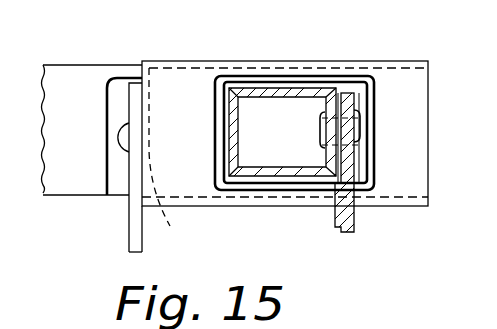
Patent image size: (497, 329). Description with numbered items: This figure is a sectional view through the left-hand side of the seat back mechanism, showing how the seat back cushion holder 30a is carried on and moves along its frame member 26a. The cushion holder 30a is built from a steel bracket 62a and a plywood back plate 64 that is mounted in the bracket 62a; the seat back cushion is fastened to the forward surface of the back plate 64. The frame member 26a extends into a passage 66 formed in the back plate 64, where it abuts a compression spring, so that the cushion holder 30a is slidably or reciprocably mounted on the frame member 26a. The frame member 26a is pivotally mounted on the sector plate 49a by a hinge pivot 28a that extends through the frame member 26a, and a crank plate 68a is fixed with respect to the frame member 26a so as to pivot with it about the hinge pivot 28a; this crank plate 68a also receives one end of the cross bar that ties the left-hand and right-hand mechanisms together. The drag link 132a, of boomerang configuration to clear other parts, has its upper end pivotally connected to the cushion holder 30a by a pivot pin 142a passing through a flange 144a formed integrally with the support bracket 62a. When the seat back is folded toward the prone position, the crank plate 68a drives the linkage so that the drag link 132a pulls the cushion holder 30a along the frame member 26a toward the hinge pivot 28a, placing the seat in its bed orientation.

The back plate 64 is at (87, 47).
The cushion holder 30a is at (165, 59).
The steel bracket 62a is at (190, 75).
The passage 66 is at (258, 80).
The frame member 26a is at (293, 92).
The crank plate 68a is at (340, 97).
The hinge pivot 28a is at (360, 118).
The sector plate 49a is at (348, 163).
The pivot pin 142a is at (125, 137).
The drag link 132a is at (133, 178).
The flange 144a is at (183, 158).